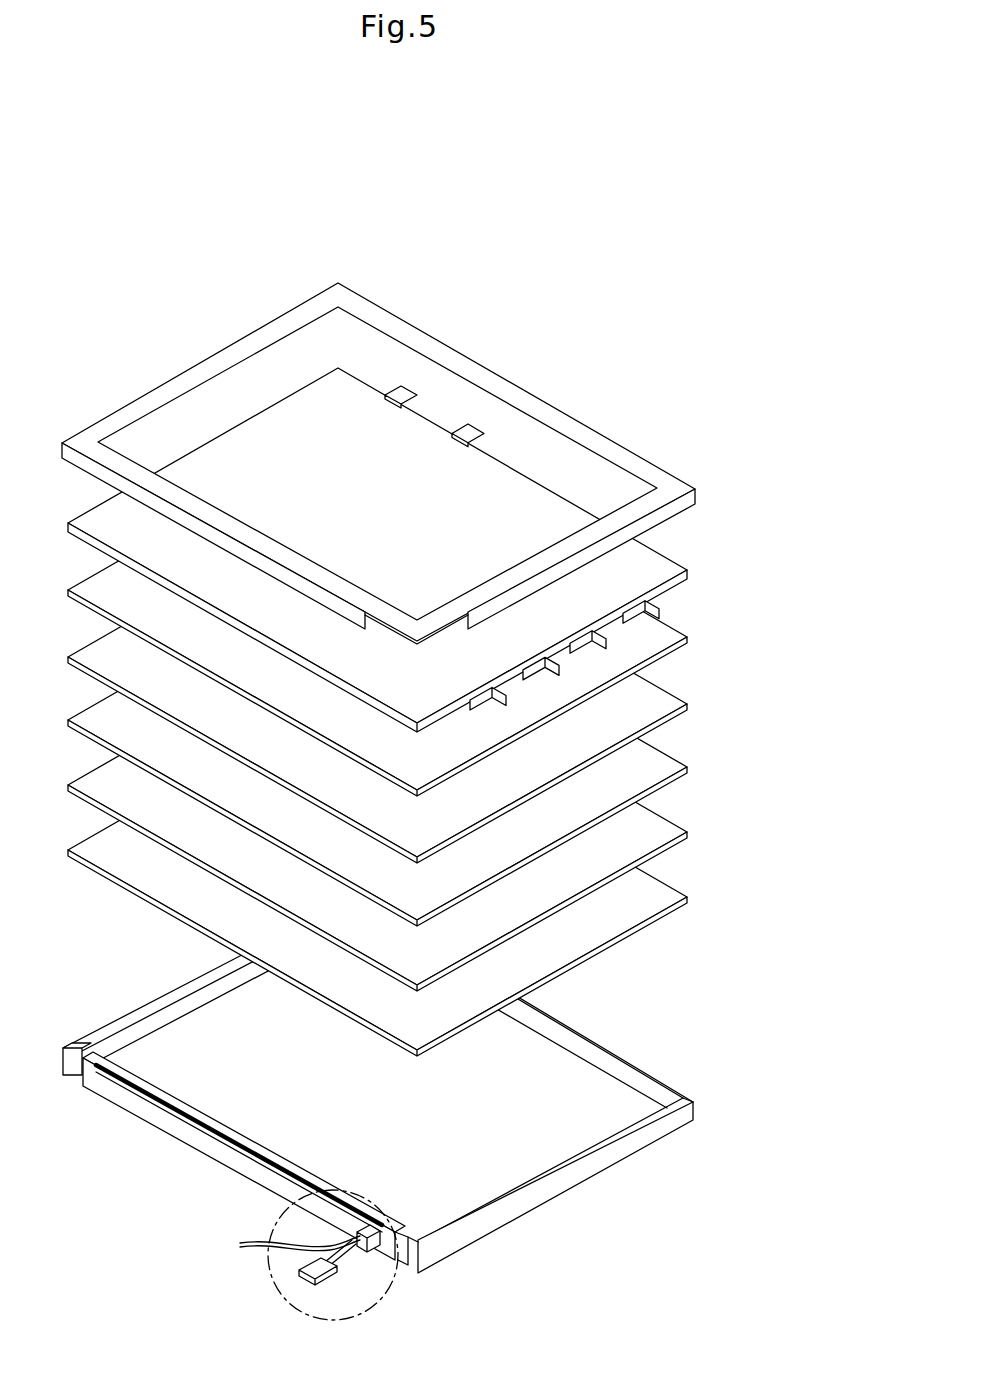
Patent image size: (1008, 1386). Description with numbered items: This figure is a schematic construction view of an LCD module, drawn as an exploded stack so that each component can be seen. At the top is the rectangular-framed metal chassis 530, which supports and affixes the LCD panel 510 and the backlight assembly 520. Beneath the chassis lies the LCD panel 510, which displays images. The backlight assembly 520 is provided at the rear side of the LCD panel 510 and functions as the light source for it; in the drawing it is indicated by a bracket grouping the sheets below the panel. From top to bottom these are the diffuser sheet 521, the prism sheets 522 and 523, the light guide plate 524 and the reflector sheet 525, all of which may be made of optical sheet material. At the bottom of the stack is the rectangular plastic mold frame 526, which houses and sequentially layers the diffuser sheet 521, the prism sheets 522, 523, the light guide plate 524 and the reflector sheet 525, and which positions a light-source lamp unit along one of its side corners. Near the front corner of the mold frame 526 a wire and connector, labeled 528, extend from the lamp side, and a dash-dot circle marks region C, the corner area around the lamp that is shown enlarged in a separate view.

The rectangular-framed metal chassis 530 is at (668, 484).
The LCD panel 510 is at (682, 567).
The backlight assembly 520 is at (468, 854).
The diffuser sheet 521 is at (430, 615).
The prism sheet 522 is at (682, 703).
The prism sheet 523 is at (682, 766).
The light guide plate 524 is at (682, 831).
The reflector sheet 525 is at (682, 896).
The rectangular plastic mold frame 526 is at (683, 1100).
The lamp wire connector 528 is at (266, 1243).
The region C is at (379, 1301).